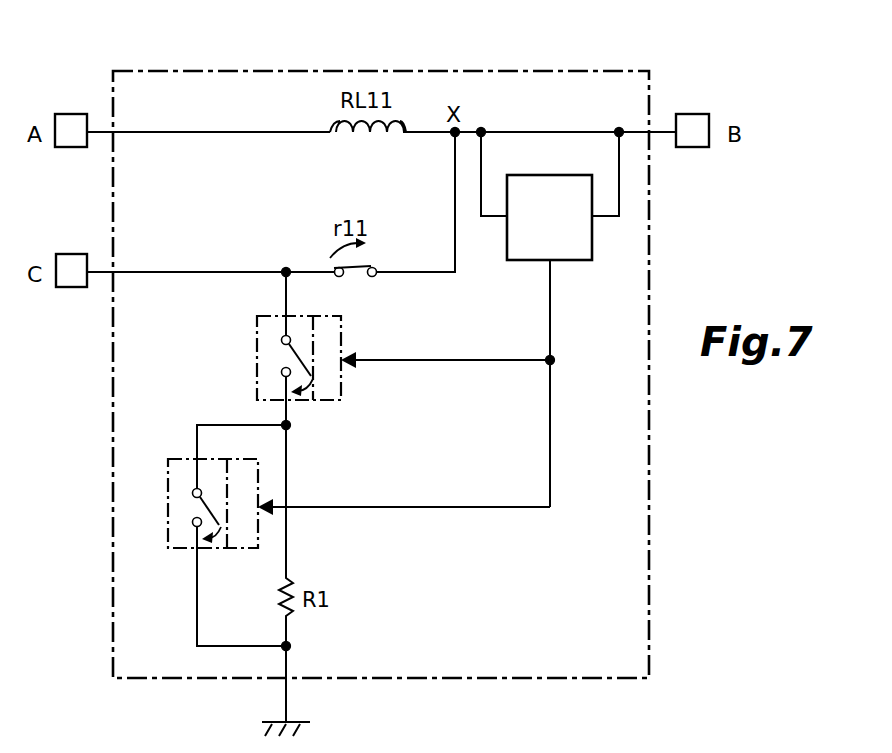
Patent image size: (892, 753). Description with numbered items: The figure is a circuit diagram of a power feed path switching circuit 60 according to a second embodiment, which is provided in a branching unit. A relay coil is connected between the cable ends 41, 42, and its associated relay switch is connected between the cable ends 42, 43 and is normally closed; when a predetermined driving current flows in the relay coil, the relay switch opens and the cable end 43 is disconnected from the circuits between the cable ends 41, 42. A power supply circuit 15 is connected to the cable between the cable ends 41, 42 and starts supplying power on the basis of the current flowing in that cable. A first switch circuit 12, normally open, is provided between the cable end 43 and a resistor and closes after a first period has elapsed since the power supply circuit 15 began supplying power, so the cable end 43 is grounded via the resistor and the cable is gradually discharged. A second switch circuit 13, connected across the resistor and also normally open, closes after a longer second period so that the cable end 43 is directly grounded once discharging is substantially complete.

The power feed path switching circuit 60 is at (607, 71).
The cable end 41 is at (74, 114).
The cable end 42 is at (681, 114).
The cable end 43 is at (61, 233).
The power supply circuit 15 is at (566, 236).
The first switch circuit 12 is at (341, 326).
The second switch circuit 13 is at (177, 459).